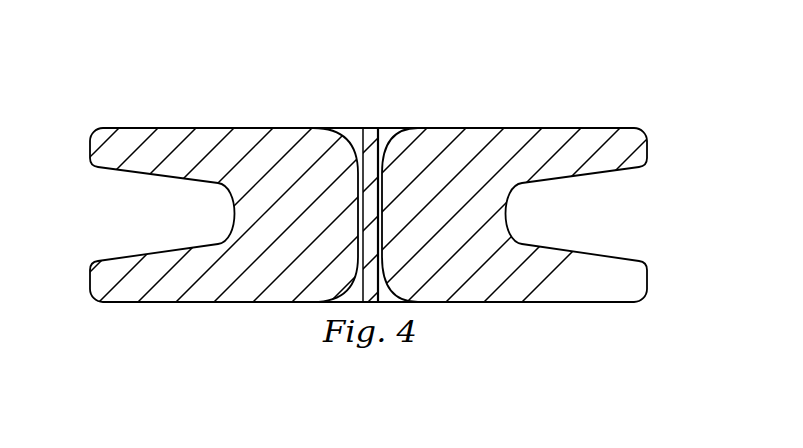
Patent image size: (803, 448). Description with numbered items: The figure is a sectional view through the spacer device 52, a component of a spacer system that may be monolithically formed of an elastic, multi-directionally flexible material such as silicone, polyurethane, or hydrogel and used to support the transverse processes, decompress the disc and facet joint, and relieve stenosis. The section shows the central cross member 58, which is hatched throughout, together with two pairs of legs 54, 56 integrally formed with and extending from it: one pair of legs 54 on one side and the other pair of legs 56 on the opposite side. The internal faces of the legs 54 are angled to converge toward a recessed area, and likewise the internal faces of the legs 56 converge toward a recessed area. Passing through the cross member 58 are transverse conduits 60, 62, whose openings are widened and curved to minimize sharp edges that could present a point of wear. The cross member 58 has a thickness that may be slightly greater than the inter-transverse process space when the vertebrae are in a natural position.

The spacer device 52 is at (201, 93).
The legs 54 is at (638, 167).
The legs 56 is at (99, 168).
The cross member 58 is at (519, 128).
The transverse conduit 60 is at (346, 138).
The transverse conduit 62 is at (391, 138).